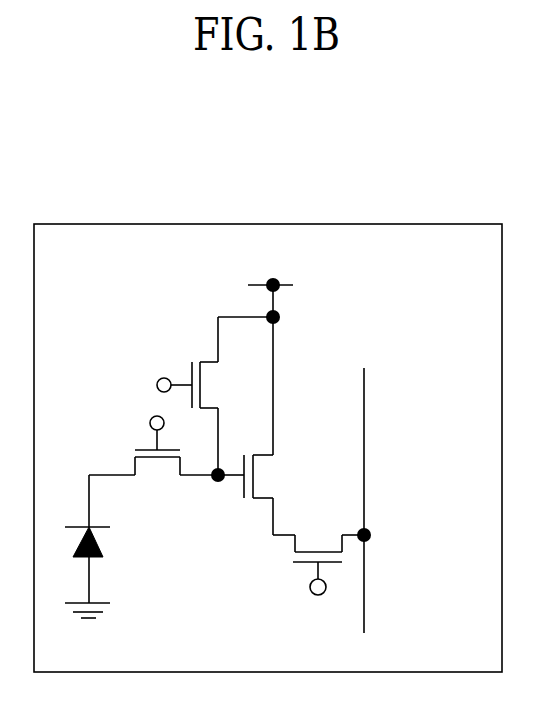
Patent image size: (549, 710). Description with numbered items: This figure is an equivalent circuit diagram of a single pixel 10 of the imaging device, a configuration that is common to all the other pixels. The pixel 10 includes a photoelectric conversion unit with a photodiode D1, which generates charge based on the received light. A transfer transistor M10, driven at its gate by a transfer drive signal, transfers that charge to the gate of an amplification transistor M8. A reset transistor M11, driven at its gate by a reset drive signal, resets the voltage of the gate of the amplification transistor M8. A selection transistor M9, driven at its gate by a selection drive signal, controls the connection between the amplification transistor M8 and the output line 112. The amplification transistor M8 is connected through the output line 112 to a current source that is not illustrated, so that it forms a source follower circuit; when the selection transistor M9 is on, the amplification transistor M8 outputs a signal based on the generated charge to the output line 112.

The pixel 10 is at (434, 224).
The output line 112 is at (367, 565).
The photodiode D1 is at (118, 545).
The amplification transistor M8 is at (259, 495).
The selection transistor M9 is at (318, 570).
The transfer transistor M10 is at (153, 460).
The reset transistor M11 is at (177, 396).